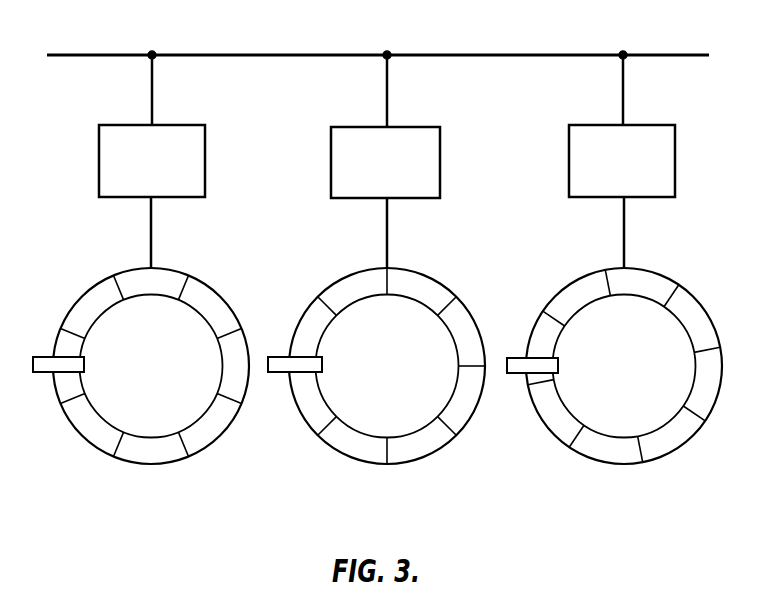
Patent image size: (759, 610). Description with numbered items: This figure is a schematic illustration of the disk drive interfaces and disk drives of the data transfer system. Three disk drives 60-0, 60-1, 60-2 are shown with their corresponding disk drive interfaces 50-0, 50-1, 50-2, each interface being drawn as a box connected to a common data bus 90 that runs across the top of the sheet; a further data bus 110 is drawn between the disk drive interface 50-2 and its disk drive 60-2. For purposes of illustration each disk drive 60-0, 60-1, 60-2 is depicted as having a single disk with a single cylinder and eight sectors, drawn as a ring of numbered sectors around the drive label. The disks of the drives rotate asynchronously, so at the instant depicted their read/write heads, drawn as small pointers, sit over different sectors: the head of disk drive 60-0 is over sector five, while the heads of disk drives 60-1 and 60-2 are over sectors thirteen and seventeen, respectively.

The data bus 90 is at (559, 55).
The data bus 110 is at (624, 240).
The disk drive interface 50-0 is at (152, 126).
The disk drive interface 50-1 is at (385, 126).
The disk drive interface 50-2 is at (622, 126).
The disk drive 60-0 is at (141, 330).
The disk drive 60-1 is at (376, 331).
The disk drive 60-2 is at (614, 366).